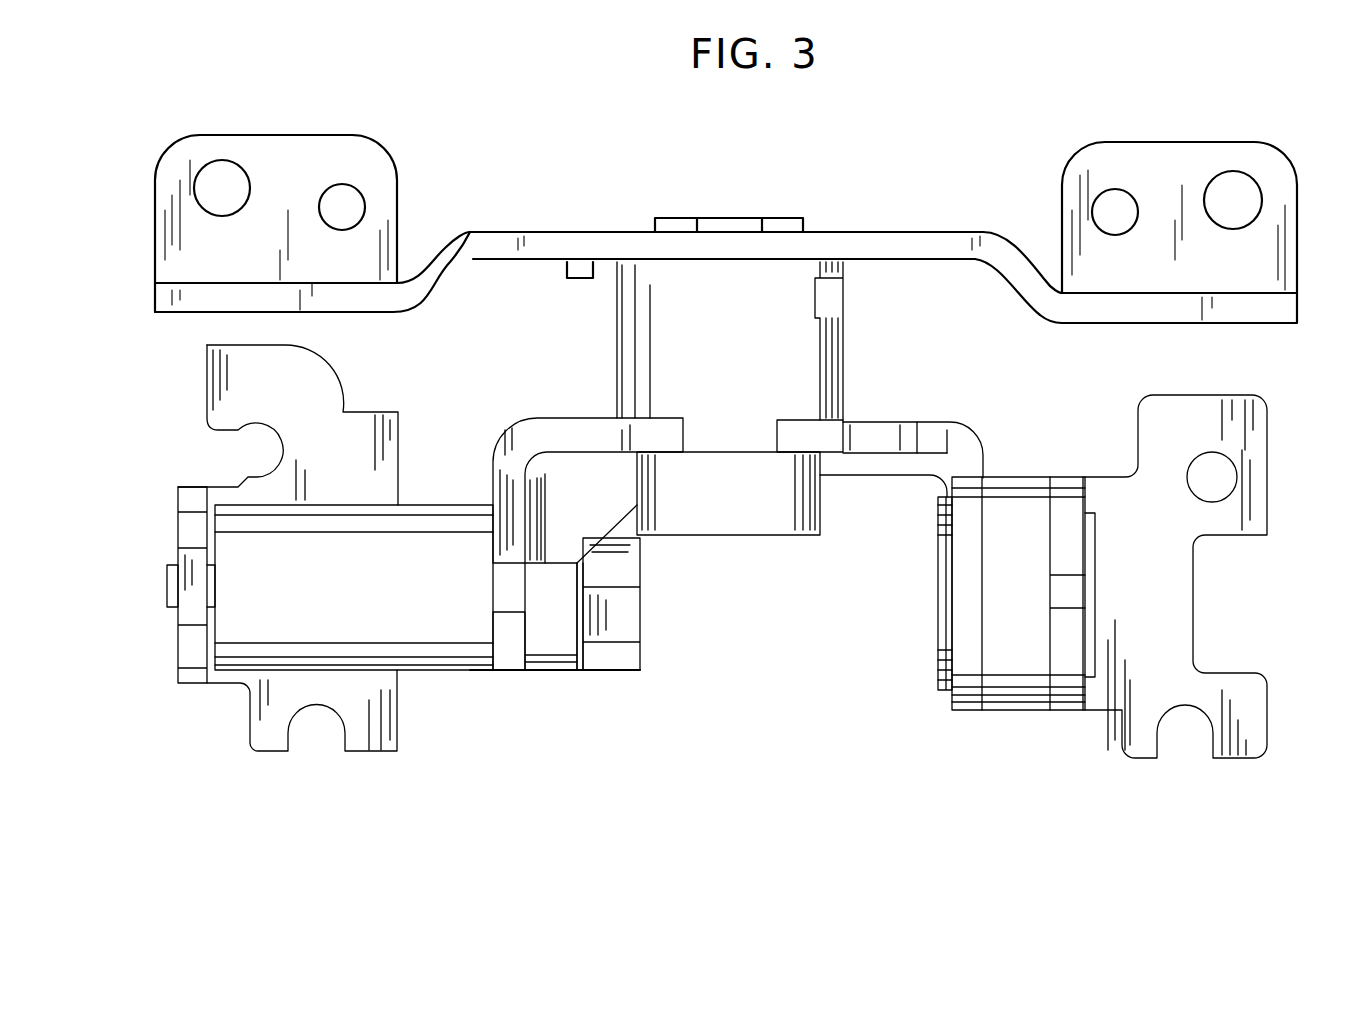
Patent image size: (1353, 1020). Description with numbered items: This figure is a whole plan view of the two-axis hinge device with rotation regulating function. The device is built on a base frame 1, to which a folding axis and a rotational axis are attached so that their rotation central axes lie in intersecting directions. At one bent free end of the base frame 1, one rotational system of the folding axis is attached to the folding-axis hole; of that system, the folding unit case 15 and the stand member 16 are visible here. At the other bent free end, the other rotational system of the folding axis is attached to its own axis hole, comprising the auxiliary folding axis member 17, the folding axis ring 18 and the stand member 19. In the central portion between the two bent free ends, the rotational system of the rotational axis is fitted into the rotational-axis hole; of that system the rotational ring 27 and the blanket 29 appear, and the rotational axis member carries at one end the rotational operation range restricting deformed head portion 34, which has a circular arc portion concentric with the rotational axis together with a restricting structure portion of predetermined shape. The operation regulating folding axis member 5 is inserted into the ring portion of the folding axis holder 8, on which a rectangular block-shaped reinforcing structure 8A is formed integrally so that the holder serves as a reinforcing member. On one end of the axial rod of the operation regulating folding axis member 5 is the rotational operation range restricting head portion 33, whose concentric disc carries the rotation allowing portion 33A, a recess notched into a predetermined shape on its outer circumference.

The base frame 1 is at (885, 438).
The operation regulating folding axis member 5 is at (168, 590).
The folding axis holder 8 is at (543, 630).
The reinforcing structure 8A is at (575, 473).
The folding unit case 15 is at (407, 632).
The stand member 16 is at (232, 410).
The auxiliary folding axis member 17 is at (940, 660).
The folding axis ring 18 is at (1023, 663).
The stand member 19 is at (1170, 620).
The rotational ring 27 is at (812, 343).
The blanket 29 is at (895, 253).
The rotational operation range restricting head portion 33 is at (640, 600).
The rotation allowing portion 33A is at (613, 622).
The rotational operation range restricting deformed head portion 34 is at (755, 512).